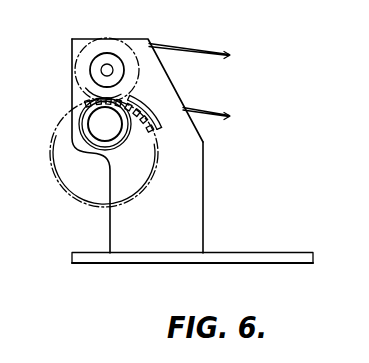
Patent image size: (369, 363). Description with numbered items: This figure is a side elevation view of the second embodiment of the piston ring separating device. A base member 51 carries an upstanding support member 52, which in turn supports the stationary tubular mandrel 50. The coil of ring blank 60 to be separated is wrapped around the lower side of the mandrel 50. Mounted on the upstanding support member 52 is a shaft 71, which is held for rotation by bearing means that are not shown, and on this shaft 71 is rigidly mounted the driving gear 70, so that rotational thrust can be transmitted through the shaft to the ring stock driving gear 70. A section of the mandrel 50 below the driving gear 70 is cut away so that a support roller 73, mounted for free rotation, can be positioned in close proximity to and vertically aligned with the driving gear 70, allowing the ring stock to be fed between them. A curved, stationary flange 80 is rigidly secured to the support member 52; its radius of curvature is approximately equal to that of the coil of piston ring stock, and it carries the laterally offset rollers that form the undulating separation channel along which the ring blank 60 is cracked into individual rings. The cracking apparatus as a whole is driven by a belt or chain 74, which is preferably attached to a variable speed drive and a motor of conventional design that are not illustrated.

The stationary tubular mandrel 50 is at (133, 150).
The base member 51 is at (141, 264).
The upstanding support member 52 is at (196, 236).
The coil of ring blank 60 is at (72, 193).
The driving gear 70 is at (123, 95).
The shaft 71 is at (107, 69).
The support roller 73 is at (110, 142).
The belt or chain 74 is at (178, 48).
The curved stationary flange 80 is at (160, 127).